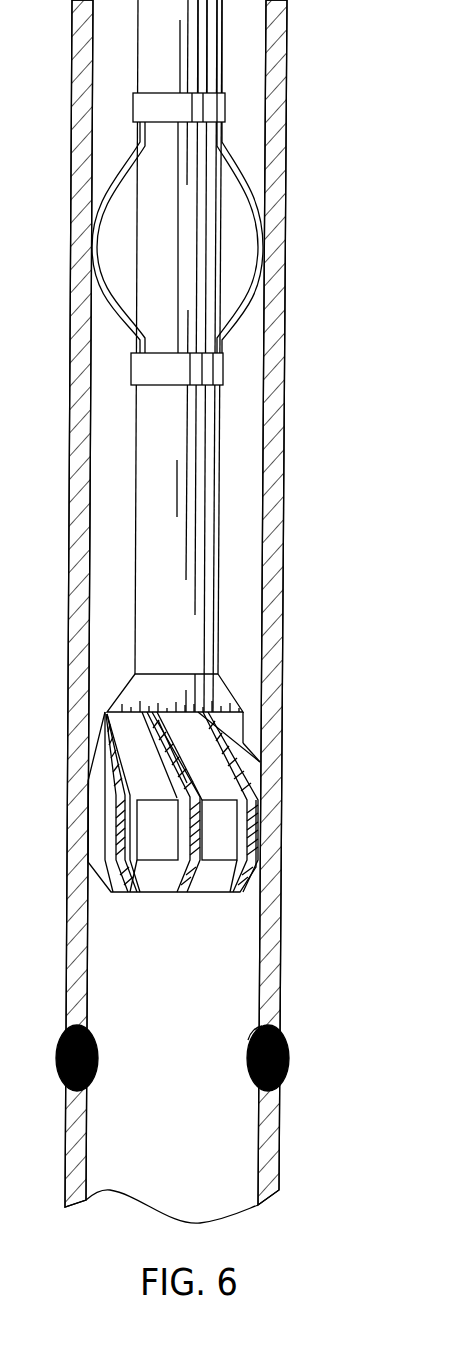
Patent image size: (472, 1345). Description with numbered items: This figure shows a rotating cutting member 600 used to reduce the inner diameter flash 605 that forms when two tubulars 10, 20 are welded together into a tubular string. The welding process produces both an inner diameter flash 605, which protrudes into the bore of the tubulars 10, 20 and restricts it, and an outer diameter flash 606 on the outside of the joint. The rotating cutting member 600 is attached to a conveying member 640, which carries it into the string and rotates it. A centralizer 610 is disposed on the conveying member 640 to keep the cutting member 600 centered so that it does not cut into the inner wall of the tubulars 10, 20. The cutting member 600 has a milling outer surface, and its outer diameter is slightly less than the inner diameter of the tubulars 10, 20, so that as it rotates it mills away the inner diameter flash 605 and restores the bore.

The tubular 10 is at (279, 1160).
The tubular 20 is at (232, 356).
The rotating cutting member 600 is at (218, 835).
The inner diameter flash 605 is at (252, 1040).
The outer diameter flash 606 is at (288, 1075).
The centralizer 610 is at (243, 180).
The conveying member 640 is at (222, 60).